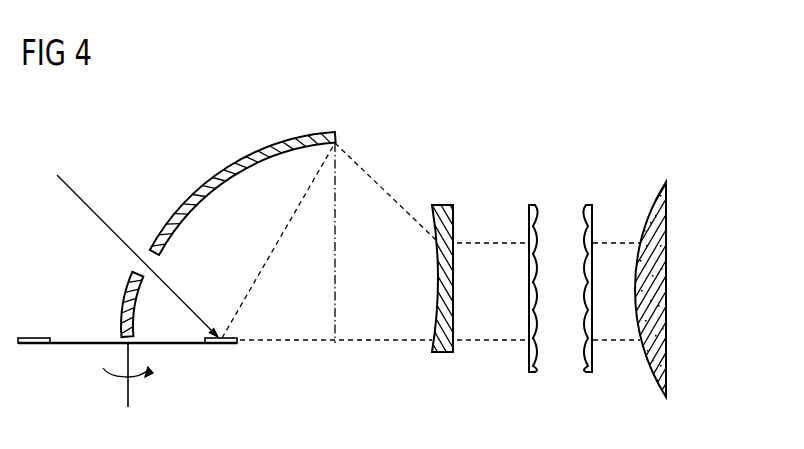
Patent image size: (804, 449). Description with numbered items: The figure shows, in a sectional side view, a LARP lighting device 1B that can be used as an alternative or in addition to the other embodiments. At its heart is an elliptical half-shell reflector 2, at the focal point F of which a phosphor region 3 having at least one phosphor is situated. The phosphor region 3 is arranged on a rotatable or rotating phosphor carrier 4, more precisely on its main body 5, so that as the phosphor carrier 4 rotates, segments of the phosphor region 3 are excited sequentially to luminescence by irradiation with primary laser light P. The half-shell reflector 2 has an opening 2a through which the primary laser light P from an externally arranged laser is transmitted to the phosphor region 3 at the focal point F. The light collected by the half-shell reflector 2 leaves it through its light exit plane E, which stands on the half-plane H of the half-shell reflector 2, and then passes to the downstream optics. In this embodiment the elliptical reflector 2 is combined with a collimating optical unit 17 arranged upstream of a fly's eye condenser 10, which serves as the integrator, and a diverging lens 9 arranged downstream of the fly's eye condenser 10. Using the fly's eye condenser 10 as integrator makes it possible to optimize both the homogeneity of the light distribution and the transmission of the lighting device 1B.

The lighting device 1B is at (500, 108).
The half-shell reflector 2 is at (268, 152).
The opening 2a is at (143, 272).
The phosphor region 3 is at (33, 338).
The phosphor carrier 4 is at (78, 369).
The main body 5 is at (188, 345).
The diverging lens 9 is at (650, 367).
The fly's eye condenser 10 is at (592, 380).
The collimating optical unit 17 is at (441, 205).
The primary laser light P is at (92, 208).
The focal point F is at (223, 320).
The light exit plane E is at (336, 172).
The half-plane H is at (370, 341).